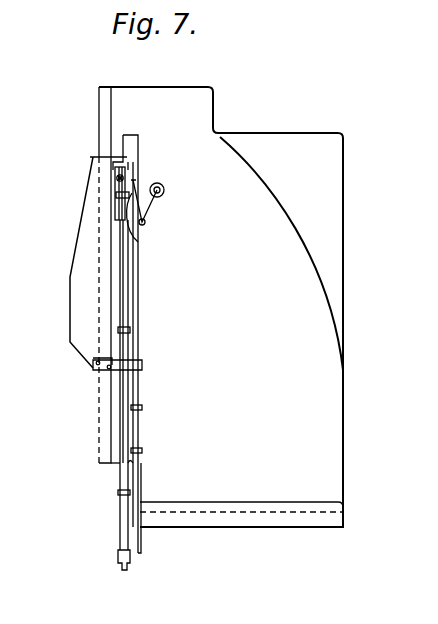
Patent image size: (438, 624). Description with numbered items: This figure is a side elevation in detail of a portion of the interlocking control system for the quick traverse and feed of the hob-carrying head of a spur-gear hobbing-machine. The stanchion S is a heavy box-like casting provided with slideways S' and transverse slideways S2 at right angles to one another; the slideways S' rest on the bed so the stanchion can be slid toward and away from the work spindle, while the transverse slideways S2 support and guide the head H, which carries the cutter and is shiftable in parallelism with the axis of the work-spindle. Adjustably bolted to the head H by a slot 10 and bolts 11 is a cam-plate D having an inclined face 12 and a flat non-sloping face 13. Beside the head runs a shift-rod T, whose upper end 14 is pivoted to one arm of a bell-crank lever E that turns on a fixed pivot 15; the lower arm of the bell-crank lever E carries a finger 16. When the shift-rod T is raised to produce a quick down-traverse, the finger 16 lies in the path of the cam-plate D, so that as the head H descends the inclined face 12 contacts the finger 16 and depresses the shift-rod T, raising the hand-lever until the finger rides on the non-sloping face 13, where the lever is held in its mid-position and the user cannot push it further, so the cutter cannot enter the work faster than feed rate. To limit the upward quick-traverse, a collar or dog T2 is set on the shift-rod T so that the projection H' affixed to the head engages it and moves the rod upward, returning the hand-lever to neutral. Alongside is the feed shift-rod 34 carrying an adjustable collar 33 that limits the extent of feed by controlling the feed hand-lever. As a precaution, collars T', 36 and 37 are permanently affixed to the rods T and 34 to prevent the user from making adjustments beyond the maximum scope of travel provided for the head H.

The slot 10 is at (116, 177).
The bolts 11 is at (117, 186).
The inclined face 12 is at (138, 242).
The flat non-sloping face 13 is at (138, 141).
The upper end of shift-rod 14 is at (122, 178).
The fixed pivot 15 is at (163, 194).
The finger 16 is at (146, 223).
The adjustable collar 33 is at (142, 408).
The feed shift-rod 34 is at (140, 428).
The collar 36 is at (117, 200).
The collar 37 is at (142, 451).
The cam-plate D is at (133, 135).
The bell-crank lever E is at (135, 179).
The head H is at (71, 262).
The projection H' is at (134, 368).
The stanchion S is at (221, 307).
The slideways S' is at (241, 534).
The transverse slideways S2 is at (103, 410).
The shift-rod T is at (103, 395).
The collar T' is at (90, 503).
The collar or dog T2 is at (130, 330).